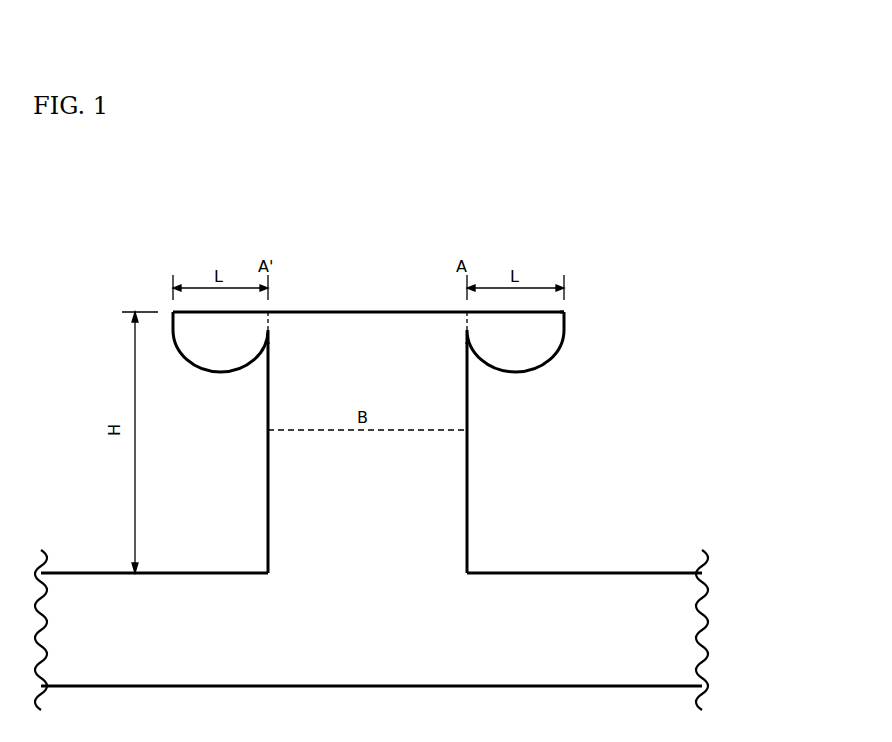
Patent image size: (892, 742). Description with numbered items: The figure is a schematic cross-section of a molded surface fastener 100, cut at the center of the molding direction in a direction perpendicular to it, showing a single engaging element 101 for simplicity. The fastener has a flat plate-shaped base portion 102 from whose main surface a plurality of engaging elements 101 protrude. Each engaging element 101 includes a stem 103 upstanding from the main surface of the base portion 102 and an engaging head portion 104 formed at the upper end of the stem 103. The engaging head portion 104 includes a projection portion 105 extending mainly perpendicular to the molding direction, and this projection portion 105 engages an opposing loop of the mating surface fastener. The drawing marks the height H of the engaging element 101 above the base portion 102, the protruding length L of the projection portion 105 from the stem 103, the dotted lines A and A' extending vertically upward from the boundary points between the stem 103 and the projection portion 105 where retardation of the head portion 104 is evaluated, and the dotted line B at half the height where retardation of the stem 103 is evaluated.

The molded surface fastener 100 is at (415, 213).
The engaging element 101 is at (592, 312).
The base portion 102 is at (550, 585).
The stem 103 is at (460, 457).
The engaging head portion 104 is at (383, 320).
The projection portion 105 is at (552, 340).